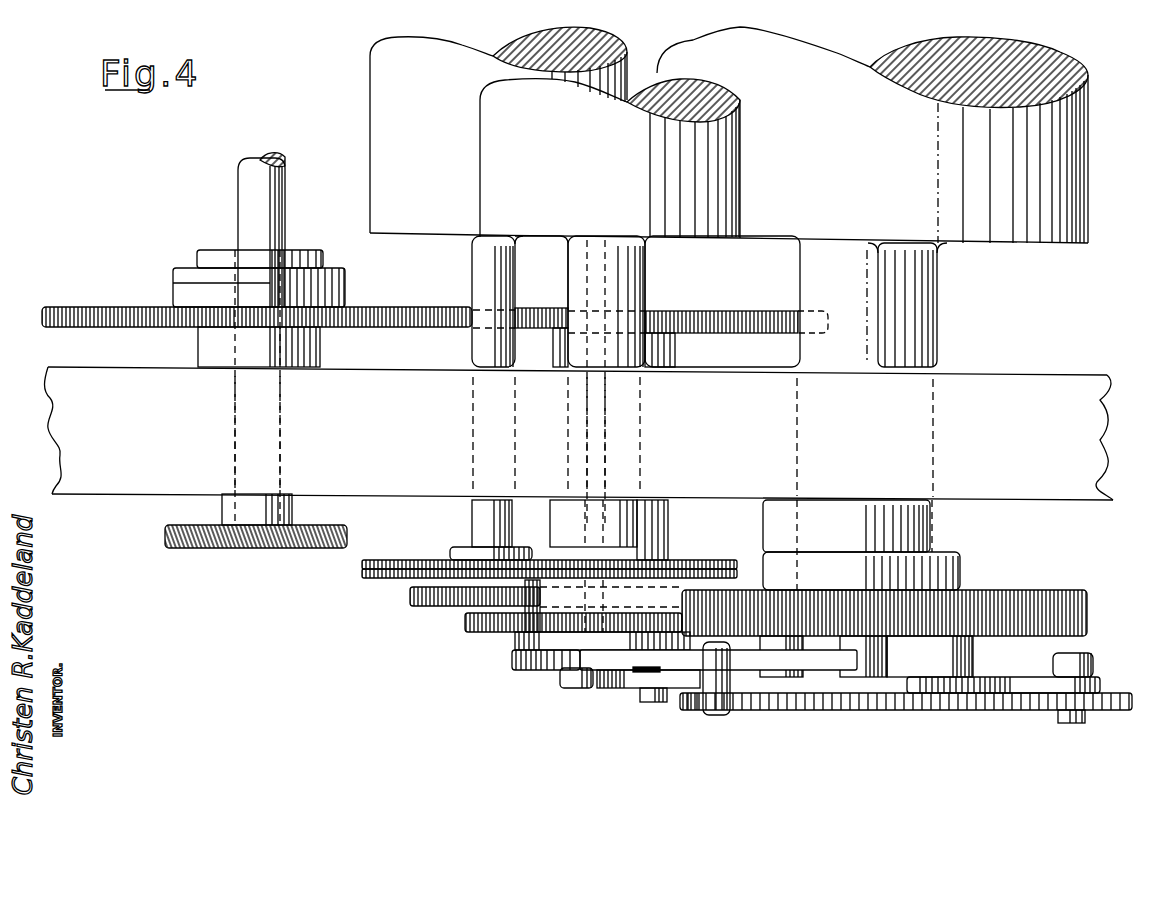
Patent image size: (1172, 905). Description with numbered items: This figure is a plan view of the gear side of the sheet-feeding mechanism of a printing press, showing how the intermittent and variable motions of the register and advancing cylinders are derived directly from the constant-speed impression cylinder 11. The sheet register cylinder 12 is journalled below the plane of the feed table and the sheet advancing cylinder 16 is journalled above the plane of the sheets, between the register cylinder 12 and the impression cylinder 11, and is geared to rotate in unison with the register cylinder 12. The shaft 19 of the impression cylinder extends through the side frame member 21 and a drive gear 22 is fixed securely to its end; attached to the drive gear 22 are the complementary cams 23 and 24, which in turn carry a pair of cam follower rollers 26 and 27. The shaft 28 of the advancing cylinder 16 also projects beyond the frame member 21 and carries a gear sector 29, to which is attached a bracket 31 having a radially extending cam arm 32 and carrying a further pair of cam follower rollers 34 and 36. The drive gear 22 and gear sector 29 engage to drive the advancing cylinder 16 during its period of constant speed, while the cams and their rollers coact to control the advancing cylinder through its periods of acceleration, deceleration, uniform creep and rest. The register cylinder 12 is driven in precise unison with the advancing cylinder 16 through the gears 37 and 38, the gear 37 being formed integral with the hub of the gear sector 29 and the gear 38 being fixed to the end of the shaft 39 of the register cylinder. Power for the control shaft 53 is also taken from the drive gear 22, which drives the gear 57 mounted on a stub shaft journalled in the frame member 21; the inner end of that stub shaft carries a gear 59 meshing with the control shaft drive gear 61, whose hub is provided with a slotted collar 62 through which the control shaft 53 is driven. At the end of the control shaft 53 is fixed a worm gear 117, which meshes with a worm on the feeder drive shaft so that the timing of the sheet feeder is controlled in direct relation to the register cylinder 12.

The impression cylinder 11 is at (1018, 230).
The sheet register cylinder 12 is at (410, 222).
The sheet advancing cylinder 16 is at (697, 233).
The shaft 19 is at (933, 533).
The side frame member 21 is at (1040, 388).
The drive gear 22 is at (1048, 592).
The complementary cam 23 is at (923, 710).
The complementary cam 24 is at (677, 682).
The cam follower roller 26 is at (1088, 658).
The cam follower roller 27 is at (642, 676).
The shaft 28 is at (633, 282).
The gear sector 29 is at (468, 632).
The bracket 31 is at (527, 662).
The cam arm 32 is at (827, 665).
The cam follower roller 34 is at (727, 715).
The cam follower roller 36 is at (573, 682).
The gear 37 is at (700, 560).
The gear 38 is at (362, 580).
The shaft 39 is at (472, 520).
The control shaft 53 is at (238, 202).
The gear 57 is at (415, 602).
The gear 59 is at (702, 312).
The control shaft drive gear 61 is at (80, 307).
The collar 62 is at (200, 257).
The worm gear 117 is at (195, 550).